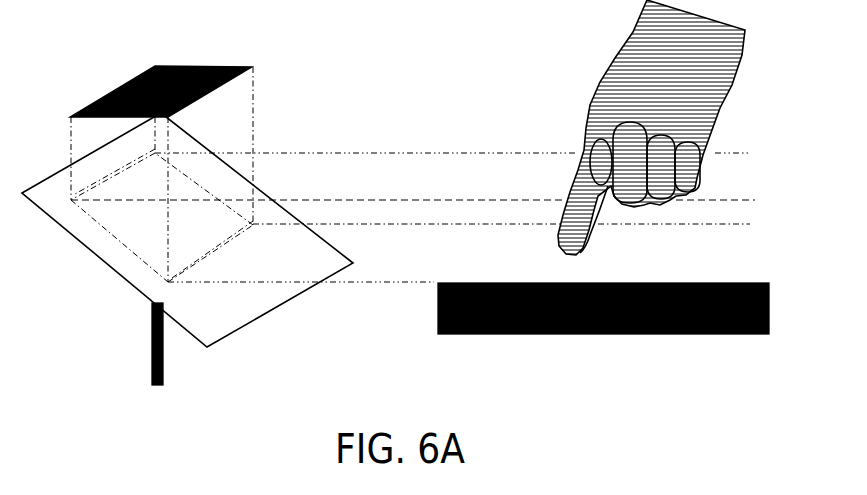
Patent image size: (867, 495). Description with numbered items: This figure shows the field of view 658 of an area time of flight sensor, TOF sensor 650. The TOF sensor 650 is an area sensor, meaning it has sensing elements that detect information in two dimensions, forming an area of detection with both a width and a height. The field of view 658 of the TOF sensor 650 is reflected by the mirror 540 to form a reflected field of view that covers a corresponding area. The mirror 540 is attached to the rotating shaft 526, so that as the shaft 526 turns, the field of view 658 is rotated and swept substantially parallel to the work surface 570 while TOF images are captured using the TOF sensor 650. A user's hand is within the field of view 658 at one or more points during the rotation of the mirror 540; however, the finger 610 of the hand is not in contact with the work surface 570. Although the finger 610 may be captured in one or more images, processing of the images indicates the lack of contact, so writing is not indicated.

The mirror 540 is at (95, 267).
The shaft 526 is at (147, 359).
The area TOF sensor 650 is at (101, 94).
The field of view 658 is at (423, 147).
The work surface 570 is at (637, 341).
The finger 610 is at (600, 243).